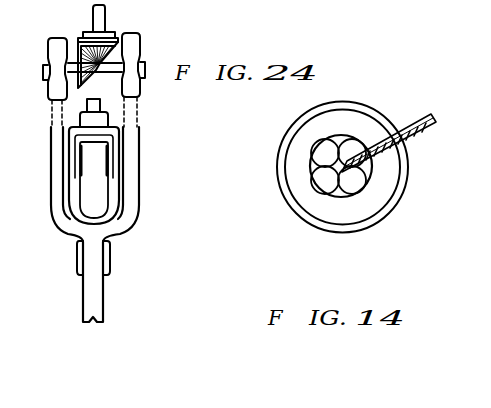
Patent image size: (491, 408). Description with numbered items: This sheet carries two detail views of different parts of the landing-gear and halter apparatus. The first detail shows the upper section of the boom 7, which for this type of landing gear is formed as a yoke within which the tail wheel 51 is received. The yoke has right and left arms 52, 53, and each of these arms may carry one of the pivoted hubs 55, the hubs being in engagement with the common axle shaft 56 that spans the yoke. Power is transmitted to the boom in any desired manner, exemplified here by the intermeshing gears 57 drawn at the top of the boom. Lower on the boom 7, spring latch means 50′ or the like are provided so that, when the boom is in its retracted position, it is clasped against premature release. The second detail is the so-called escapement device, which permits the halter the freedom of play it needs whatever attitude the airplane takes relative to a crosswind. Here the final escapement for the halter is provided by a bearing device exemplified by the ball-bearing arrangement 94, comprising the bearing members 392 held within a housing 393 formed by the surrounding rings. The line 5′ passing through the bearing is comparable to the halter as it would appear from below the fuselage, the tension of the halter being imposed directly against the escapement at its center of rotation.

In FIG. 24, the boom 7 is at (47, 142).
In FIG. 24, the spring latch means 50′ is at (107, 257).
In FIG. 24, the tail wheel 51 is at (73, 204).
In FIG. 24, the right arm of yoke 52 is at (58, 175).
In FIG. 24, the left arm of yoke 53 is at (128, 174).
In FIG. 24, the pivoted hubs 55 is at (55, 65).
In FIG. 24, the common axle shaft 56 is at (107, 68).
In FIG. 24, the intermeshing gears 57 is at (120, 32).
In FIG. 14, the bearing members 392 is at (325, 150).
In FIG. 14, the outer sheath 393 is at (383, 190).
In FIG. 14, the ball-bearing arrangement 94 is at (300, 184).
In FIG. 14, the line 5′ is at (417, 122).